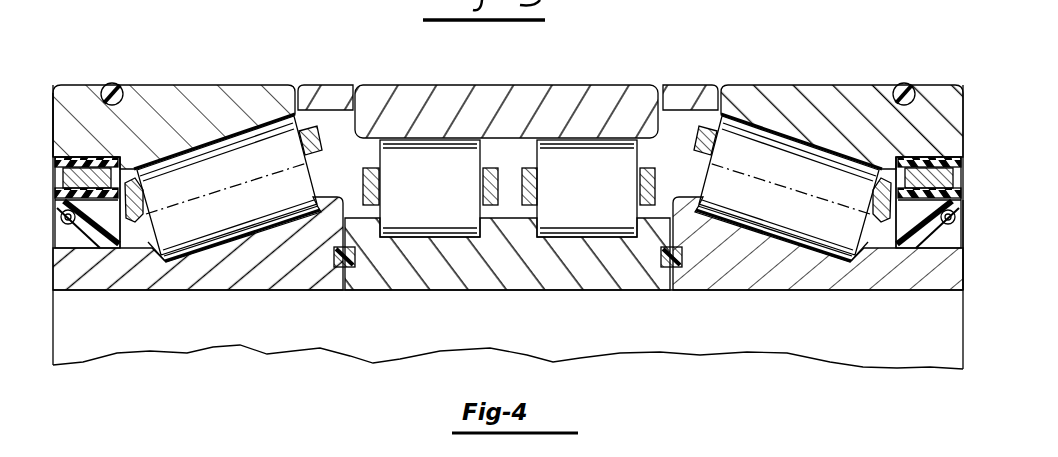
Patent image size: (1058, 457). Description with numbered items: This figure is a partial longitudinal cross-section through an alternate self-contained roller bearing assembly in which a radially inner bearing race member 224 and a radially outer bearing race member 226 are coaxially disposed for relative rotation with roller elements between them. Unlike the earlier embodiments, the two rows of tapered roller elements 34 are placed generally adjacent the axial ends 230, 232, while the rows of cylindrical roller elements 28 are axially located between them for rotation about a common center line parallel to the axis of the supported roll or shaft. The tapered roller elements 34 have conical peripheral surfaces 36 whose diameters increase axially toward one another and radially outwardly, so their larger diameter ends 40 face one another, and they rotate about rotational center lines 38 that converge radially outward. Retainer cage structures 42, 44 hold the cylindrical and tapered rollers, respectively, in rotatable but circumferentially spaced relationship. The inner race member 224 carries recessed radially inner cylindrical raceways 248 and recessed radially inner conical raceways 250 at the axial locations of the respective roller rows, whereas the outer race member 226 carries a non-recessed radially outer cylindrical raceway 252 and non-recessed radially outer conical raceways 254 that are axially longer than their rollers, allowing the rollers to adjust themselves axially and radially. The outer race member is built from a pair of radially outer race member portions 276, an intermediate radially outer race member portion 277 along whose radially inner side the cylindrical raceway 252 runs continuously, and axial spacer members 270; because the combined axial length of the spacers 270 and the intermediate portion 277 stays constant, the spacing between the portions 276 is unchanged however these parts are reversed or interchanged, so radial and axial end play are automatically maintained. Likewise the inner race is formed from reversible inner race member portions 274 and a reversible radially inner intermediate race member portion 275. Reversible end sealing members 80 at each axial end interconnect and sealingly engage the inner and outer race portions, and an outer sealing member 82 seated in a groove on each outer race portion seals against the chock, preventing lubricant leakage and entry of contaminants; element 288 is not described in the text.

The cylindrical roller elements 28 is at (410, 152).
The tapered roller elements 34 is at (210, 98).
The conical peripheral surfaces 36 is at (193, 247).
The rotational center lines 38 is at (252, 180).
The larger diameter ends 40 is at (314, 178).
The retainer cage structure 42 is at (487, 212).
The retainer cage structure 44 is at (78, 246).
The end sealing members 80 is at (54, 300).
The outer sealing member 82 is at (113, 84).
The radially inner bearing race member 224 is at (270, 294).
The radially outer bearing race member 226 is at (508, 84).
The axial end 230 is at (51, 100).
The axial end 232 is at (963, 284).
The recessed radially inner cylindrical raceways 248 is at (403, 235).
The recessed radially inner conical raceways 250 is at (220, 235).
The non-recessed radially outer cylindrical raceway 252 is at (450, 145).
The non-recessed radially outer conical raceways 254 is at (187, 173).
The axial spacer members 270 is at (328, 97).
The radially inner race member portions 274 is at (130, 237).
The radially inner intermediate race member portion 275 is at (530, 283).
The radially outer race member portions 276 is at (205, 100).
The intermediate radially outer race member portion 277 is at (390, 100).
The O-ring 288 is at (338, 268).